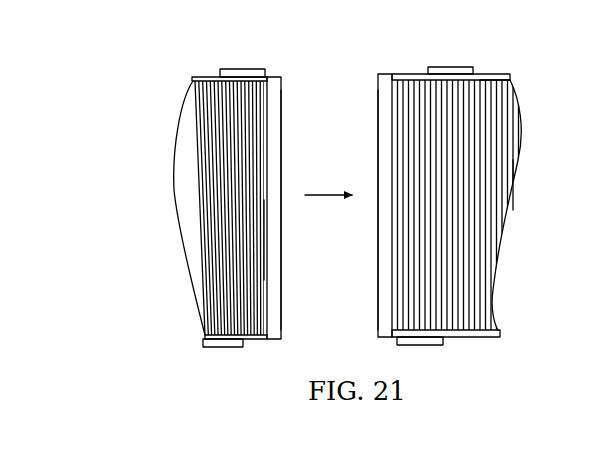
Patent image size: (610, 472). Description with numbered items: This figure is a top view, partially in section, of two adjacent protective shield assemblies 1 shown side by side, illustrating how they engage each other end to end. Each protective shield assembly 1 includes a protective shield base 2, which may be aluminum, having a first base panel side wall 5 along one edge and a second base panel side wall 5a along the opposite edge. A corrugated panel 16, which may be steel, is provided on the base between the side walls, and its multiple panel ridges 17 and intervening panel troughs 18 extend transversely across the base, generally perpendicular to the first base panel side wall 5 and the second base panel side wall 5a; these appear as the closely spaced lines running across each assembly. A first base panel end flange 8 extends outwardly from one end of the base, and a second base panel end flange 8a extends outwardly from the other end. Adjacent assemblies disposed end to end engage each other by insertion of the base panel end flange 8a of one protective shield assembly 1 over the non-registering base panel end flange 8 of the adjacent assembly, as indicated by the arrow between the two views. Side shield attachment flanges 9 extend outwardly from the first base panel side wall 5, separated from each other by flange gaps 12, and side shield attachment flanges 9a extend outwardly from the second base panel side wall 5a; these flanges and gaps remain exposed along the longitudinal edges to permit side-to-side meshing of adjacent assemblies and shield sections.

The protective shield assembly 1 is at (229, 50).
The protective shield base 2 is at (277, 70).
The first base panel side wall 5 is at (210, 80).
The second base panel side wall 5a is at (270, 337).
The first base panel end flange 8 is at (390, 287).
The second base panel end flange 8a is at (273, 147).
The side shield attachment flange 9 is at (258, 70).
The side shield attachment flange 9a is at (240, 347).
The flange gap 12 is at (497, 66).
The corrugated panel 16 is at (178, 110).
The panel ridge 17 is at (212, 205).
The panel trough 18 is at (245, 240).